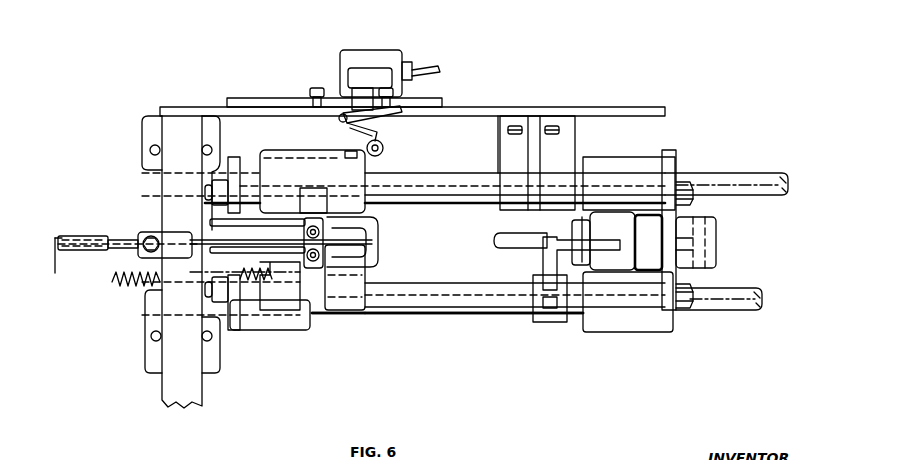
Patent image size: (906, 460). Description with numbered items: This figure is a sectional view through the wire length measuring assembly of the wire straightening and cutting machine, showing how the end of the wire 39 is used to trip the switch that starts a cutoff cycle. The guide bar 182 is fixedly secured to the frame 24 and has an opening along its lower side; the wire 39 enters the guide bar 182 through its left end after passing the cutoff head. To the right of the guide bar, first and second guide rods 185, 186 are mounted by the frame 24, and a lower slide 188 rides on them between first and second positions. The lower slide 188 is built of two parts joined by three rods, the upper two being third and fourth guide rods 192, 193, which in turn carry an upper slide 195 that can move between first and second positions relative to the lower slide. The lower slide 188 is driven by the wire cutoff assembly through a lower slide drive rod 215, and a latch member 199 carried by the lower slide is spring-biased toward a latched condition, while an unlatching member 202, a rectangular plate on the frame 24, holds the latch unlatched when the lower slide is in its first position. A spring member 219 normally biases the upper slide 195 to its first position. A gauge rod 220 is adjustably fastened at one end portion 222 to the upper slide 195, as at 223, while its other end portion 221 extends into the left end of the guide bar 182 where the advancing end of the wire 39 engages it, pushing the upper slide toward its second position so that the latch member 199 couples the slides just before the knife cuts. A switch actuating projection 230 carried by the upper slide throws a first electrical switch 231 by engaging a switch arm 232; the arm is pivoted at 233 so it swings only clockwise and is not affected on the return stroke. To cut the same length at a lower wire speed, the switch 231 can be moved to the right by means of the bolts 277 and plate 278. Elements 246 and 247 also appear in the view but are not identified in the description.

The frame 24 is at (150, 353).
The wire 39 is at (66, 265).
The guide bar 182 is at (72, 236).
The first guide rod 185 is at (420, 313).
The second guide rod 186 is at (410, 175).
The lower slide 188 is at (610, 332).
The third guide rod 192 is at (472, 283).
The fourth guide rod 193 is at (468, 205).
The upper slide 195 is at (358, 263).
The latch member 199 is at (548, 258).
The unlatching member 202 is at (533, 300).
The lower slide drive rod 215 is at (518, 236).
The spring member 219 is at (128, 288).
The gauge rod 220 is at (270, 240).
The other end portion of gauge rod 221 is at (118, 232).
The one end portion of gauge rod 222 is at (323, 234).
The fastening location on upper slide 223 is at (356, 211).
The switch actuating projection 230 is at (345, 150).
The first electrical switch 231 is at (360, 78).
The switch arm 232 is at (383, 133).
The pivot 233 is at (400, 116).
The switch tab 246 is at (424, 62).
The switch actuator lever 247 is at (436, 69).
The bolts 277 is at (318, 88).
The plate 278 is at (498, 107).